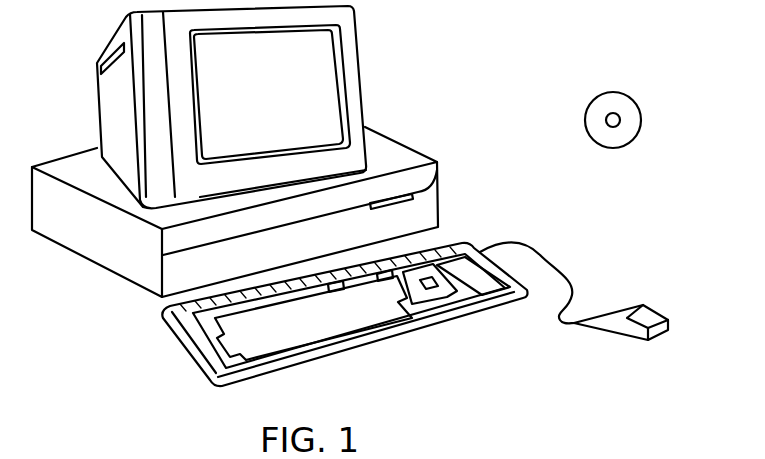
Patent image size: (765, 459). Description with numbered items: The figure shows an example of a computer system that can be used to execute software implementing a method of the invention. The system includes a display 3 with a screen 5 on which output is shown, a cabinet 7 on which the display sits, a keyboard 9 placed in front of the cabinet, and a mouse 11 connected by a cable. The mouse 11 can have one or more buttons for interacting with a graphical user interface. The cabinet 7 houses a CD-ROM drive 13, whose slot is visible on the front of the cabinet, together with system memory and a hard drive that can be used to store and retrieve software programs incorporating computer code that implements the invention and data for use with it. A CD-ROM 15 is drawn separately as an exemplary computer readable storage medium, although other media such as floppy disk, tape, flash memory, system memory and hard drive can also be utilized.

The display 3 is at (365, 107).
The screen 5 is at (335, 54).
The cabinet 7 is at (117, 278).
The keyboard 9 is at (366, 339).
The mouse 11 is at (657, 308).
The CD-ROM drive 13 is at (440, 167).
The CD-ROM 15 is at (612, 92).